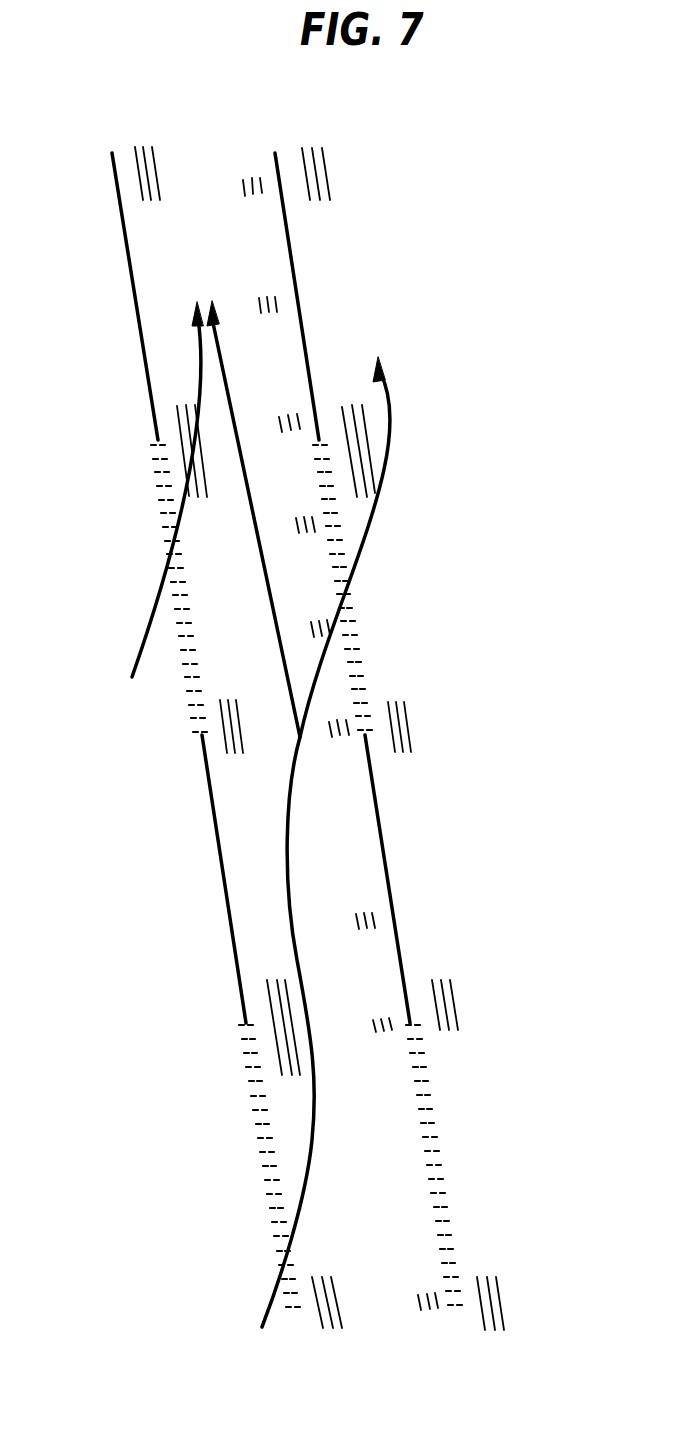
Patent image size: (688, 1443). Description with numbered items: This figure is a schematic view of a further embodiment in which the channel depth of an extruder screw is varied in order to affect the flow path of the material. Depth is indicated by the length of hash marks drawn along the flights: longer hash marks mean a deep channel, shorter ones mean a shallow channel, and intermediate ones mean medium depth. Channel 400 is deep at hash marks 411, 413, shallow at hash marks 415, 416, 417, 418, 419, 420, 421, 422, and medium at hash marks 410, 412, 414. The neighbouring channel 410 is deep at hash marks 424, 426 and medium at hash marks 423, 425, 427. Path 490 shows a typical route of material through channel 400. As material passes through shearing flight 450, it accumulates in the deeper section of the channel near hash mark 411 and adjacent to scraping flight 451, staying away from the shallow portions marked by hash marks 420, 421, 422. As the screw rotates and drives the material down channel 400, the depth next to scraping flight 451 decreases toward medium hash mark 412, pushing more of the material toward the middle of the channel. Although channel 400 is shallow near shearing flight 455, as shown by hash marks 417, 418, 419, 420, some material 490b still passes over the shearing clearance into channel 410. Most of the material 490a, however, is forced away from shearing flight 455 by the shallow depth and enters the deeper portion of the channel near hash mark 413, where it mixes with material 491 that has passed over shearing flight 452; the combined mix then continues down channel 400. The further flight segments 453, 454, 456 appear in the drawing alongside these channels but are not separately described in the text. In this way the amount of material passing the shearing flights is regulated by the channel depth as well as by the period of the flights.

The channel 400 is at (198, 217).
The channel 410 is at (480, 637).
The hash mark 411 is at (242, 1013).
The hash mark 412 is at (228, 742).
The hash mark 413 is at (178, 423).
The hash mark 414 is at (137, 174).
The hash mark 415 is at (255, 178).
The hash mark 416 is at (278, 303).
The hash mark 417 is at (292, 414).
The hash mark 418 is at (316, 522).
The hash mark 419 is at (330, 623).
The hash mark 420 is at (342, 737).
The hash mark 421 is at (375, 918).
The hash mark 422 is at (385, 1022).
The hash mark 423 is at (325, 172).
The hash mark 424 is at (366, 437).
The hash mark 425 is at (410, 732).
The hash mark 426 is at (453, 1020).
The hash mark 427 is at (500, 1297).
The shearing flight 450 is at (257, 1125).
The scraping flight 451 is at (225, 890).
The shearing flight 452 is at (166, 507).
The solid lane line 453 is at (136, 315).
The solid lane line 454 is at (295, 262).
The shearing flight 455 is at (343, 573).
The solid lane line 456 is at (383, 853).
The path 490 is at (310, 1177).
The material 490a is at (262, 623).
The material 490b is at (395, 458).
The material 491 is at (150, 616).